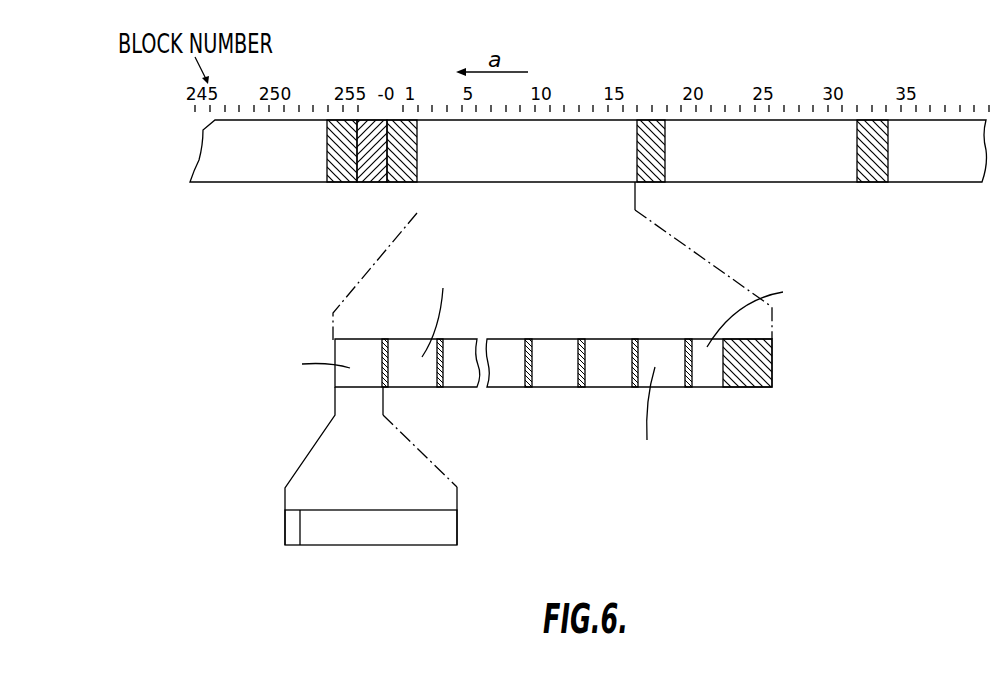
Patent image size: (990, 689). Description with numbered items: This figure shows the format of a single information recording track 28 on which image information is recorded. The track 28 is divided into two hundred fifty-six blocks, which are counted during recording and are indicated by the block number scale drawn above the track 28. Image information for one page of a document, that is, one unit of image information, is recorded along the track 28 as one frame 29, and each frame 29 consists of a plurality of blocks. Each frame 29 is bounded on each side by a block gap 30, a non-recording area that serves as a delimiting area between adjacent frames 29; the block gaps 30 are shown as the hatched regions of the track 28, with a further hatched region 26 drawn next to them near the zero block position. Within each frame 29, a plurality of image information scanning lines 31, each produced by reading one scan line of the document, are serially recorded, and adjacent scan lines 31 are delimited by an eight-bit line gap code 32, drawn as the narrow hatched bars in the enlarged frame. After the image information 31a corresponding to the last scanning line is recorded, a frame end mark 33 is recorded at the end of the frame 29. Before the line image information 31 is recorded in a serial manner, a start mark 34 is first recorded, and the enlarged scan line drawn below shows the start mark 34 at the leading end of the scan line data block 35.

The index mark 26 is at (378, 183).
The information recording track 28 is at (228, 188).
The frame 29 is at (283, 183).
The block gap 30 is at (340, 183).
The image information scanning line 31 is at (418, 340).
The image information corresponding to the last scanning line 31a is at (663, 378).
The line gap code 32 is at (440, 390).
The frame end mark 33 is at (716, 389).
The start mark 34 is at (293, 543).
The scan line data block 35 is at (428, 545).